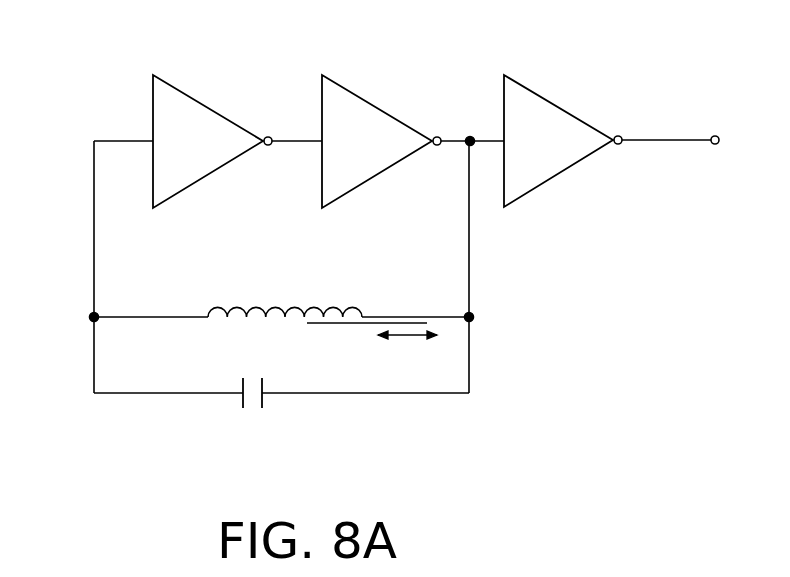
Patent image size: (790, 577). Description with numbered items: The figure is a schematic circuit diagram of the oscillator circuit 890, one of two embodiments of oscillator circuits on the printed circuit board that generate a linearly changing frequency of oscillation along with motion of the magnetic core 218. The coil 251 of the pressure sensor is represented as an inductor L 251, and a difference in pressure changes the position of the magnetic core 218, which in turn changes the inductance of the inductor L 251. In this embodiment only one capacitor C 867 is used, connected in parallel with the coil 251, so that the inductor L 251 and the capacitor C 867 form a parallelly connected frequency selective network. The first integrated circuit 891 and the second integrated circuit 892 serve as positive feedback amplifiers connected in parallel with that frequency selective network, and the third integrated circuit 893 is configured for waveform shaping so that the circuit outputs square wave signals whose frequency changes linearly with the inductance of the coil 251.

The oscillator circuit 890 is at (96, 82).
The integrated circuit U1 891 is at (220, 113).
The integrated circuit U2 892 is at (390, 113).
The integrated circuit U3 893 is at (563, 108).
The coil 251 is at (328, 311).
The magnetic core 218 is at (354, 325).
The capacitor C 867 is at (265, 389).